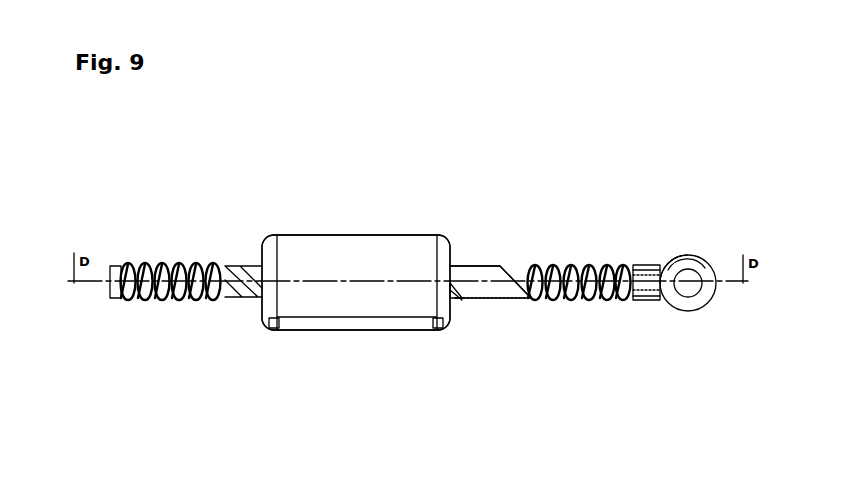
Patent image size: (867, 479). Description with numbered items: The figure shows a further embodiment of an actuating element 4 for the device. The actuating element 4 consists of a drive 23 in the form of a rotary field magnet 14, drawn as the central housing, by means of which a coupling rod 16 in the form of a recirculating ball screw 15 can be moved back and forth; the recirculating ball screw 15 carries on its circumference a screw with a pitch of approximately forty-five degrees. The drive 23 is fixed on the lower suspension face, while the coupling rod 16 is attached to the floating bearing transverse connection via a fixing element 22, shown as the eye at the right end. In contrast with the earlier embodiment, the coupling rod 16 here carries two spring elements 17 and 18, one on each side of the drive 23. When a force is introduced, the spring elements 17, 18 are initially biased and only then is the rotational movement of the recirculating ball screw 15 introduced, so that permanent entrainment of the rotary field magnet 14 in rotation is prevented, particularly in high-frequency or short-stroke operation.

The actuating element 4 is at (490, 160).
The spring element 18 is at (170, 265).
The drive 23 is at (348, 278).
The rotary field magnet 14 is at (356, 282).
The recirculating ball screw 15 is at (520, 300).
The coupling rod 16 is at (490, 281).
The spring element 17 is at (587, 265).
The fixing element 22 is at (690, 258).